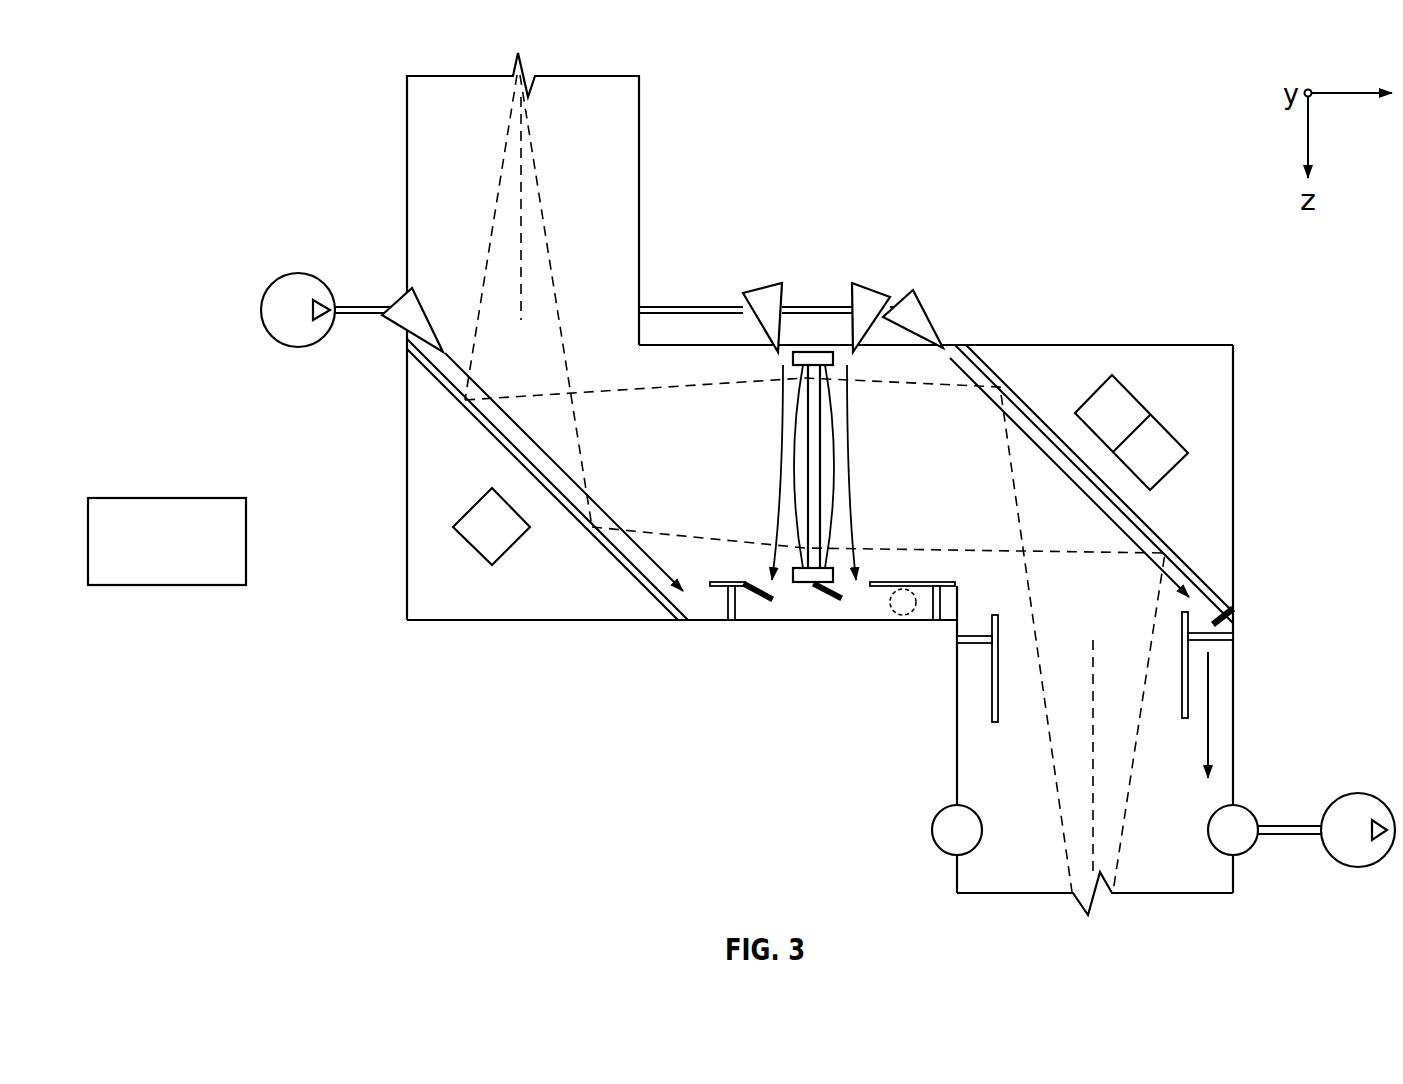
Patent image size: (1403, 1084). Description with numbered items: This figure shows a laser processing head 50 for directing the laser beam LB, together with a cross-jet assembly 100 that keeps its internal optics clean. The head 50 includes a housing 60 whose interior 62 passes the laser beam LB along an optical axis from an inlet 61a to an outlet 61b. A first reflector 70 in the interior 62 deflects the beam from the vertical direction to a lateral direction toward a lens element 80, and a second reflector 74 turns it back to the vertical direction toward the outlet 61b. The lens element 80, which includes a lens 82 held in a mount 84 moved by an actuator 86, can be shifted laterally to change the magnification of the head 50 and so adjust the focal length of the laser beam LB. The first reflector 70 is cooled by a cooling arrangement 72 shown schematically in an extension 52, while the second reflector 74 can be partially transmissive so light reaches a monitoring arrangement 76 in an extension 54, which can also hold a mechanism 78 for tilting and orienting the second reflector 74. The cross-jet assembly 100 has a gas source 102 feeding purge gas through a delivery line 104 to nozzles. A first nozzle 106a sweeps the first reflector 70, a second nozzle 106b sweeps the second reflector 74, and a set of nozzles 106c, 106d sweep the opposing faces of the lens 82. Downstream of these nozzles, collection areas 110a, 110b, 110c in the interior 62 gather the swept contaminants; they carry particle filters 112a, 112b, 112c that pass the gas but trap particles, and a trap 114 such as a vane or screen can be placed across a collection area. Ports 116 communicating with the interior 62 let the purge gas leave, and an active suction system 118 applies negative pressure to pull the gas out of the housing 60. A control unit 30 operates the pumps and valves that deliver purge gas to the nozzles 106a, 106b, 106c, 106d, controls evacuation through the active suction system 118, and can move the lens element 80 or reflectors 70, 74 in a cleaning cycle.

The cross-jet assembly 100 is at (250, 208).
The laser processing head 50 is at (905, 160).
The housing 60 is at (407, 120).
The inlet 61a is at (603, 74).
The outlet 61b is at (1190, 893).
The interior 62 is at (640, 168).
The extension 52 is at (407, 545).
The extension 54 is at (1233, 368).
The first reflector 70 is at (638, 578).
The cooling arrangement 72 is at (492, 565).
The second reflector 74 is at (1187, 567).
The monitoring arrangement 76 is at (1180, 440).
The mechanism 78 is at (1130, 390).
The lens element 80 is at (835, 423).
The lens 82 is at (828, 457).
The mount 84 is at (828, 560).
The actuator 86 is at (887, 567).
The gas source 102 is at (298, 347).
The delivery line 104 is at (367, 318).
The first nozzle 106a is at (400, 296).
The second nozzle 106b is at (935, 320).
The nozzle 106c is at (763, 285).
The nozzle 106d is at (872, 283).
The collection area 110a is at (700, 608).
The second collection area 110b is at (1213, 622).
The collection area 110c is at (865, 608).
The filter 112a is at (730, 620).
The filter 112b is at (1233, 637).
The filter 112c is at (937, 620).
The trap 114 is at (827, 597).
The port 116 is at (893, 620).
The active suction system 118 is at (1358, 868).
The laser beam LB is at (1065, 845).
The control unit 30 is at (167, 585).